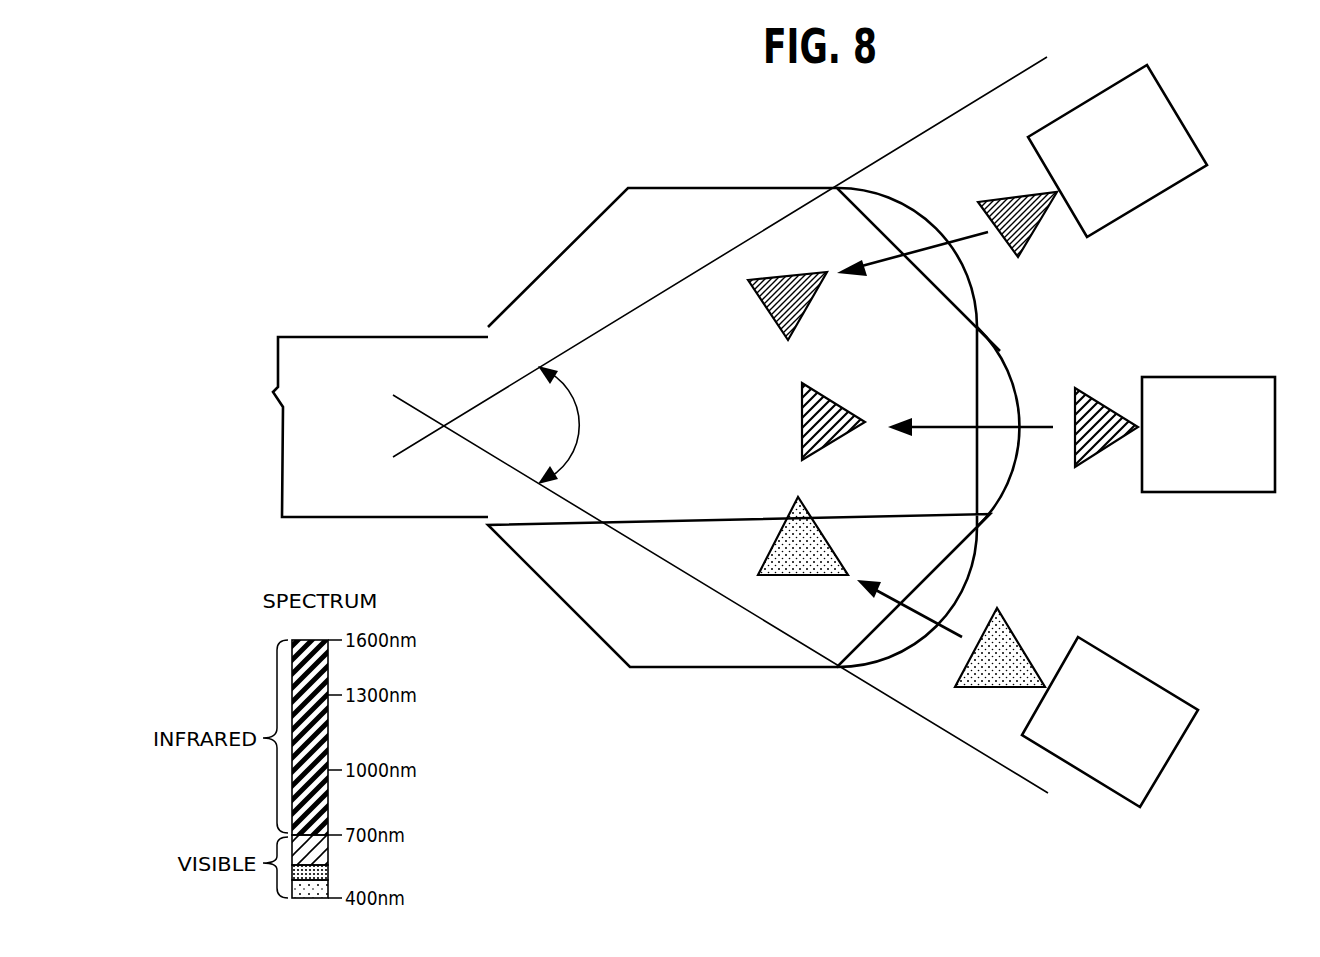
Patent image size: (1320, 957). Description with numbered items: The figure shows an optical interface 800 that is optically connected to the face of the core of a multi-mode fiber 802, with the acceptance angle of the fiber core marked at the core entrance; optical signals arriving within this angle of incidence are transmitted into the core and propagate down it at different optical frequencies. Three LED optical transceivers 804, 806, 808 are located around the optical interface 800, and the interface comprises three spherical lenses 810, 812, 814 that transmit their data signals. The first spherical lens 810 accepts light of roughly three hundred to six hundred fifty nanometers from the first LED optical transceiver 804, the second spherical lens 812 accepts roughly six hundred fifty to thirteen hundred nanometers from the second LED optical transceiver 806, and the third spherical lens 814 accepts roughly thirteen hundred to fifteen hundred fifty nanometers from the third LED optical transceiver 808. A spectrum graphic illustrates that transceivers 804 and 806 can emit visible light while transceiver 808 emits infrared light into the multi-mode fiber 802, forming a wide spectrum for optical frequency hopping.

The optical interface 800 is at (643, 98).
The multi-mode fiber 802 is at (377, 336).
The first LED optical transceiver 804 is at (1132, 665).
The second LED optical transceiver 806 is at (1248, 492).
The third LED optical transceiver 808 is at (1108, 87).
The first spherical lens 810 is at (982, 588).
The second spherical lens 812 is at (1025, 492).
The third spherical lens 814 is at (920, 201).